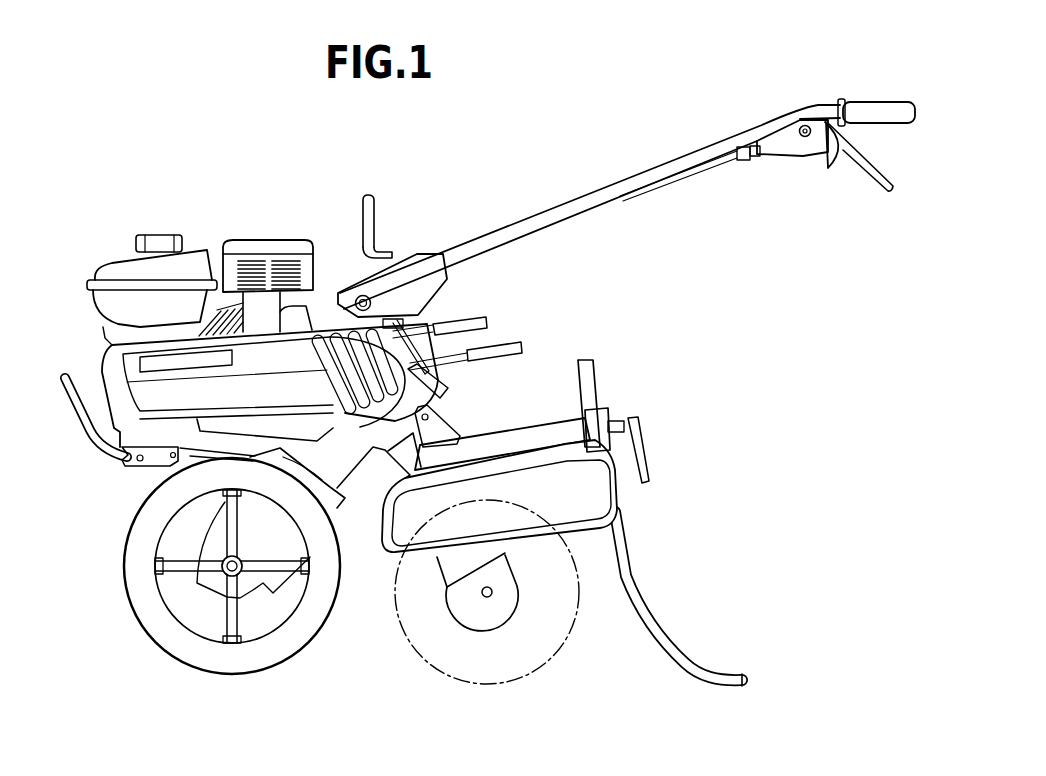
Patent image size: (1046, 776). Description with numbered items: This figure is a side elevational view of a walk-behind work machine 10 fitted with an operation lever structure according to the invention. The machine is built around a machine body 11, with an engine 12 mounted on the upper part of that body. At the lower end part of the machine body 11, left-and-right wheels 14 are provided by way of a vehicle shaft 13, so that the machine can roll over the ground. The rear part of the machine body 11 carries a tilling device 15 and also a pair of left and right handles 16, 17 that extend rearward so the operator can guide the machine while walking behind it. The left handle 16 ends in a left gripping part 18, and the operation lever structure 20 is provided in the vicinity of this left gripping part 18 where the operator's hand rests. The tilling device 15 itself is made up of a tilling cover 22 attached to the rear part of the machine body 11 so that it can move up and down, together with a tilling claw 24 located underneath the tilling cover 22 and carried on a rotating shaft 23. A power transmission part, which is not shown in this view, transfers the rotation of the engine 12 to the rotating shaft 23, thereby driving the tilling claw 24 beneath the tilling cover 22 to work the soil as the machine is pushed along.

The walk-behind work machine 10 is at (210, 156).
The machine body 11 is at (171, 457).
The engine 12 is at (115, 256).
The vehicle shaft 13 is at (226, 573).
The wheels 14 is at (237, 662).
The tilling device 15 is at (623, 502).
The left handle 16 is at (590, 203).
The right handle 17 is at (603, 189).
The left gripping part 18 is at (888, 102).
The operation lever structure 20 is at (820, 177).
The tilling cover 22 is at (580, 473).
The rotating shaft 23 is at (487, 598).
The tilling claw 24 is at (566, 647).